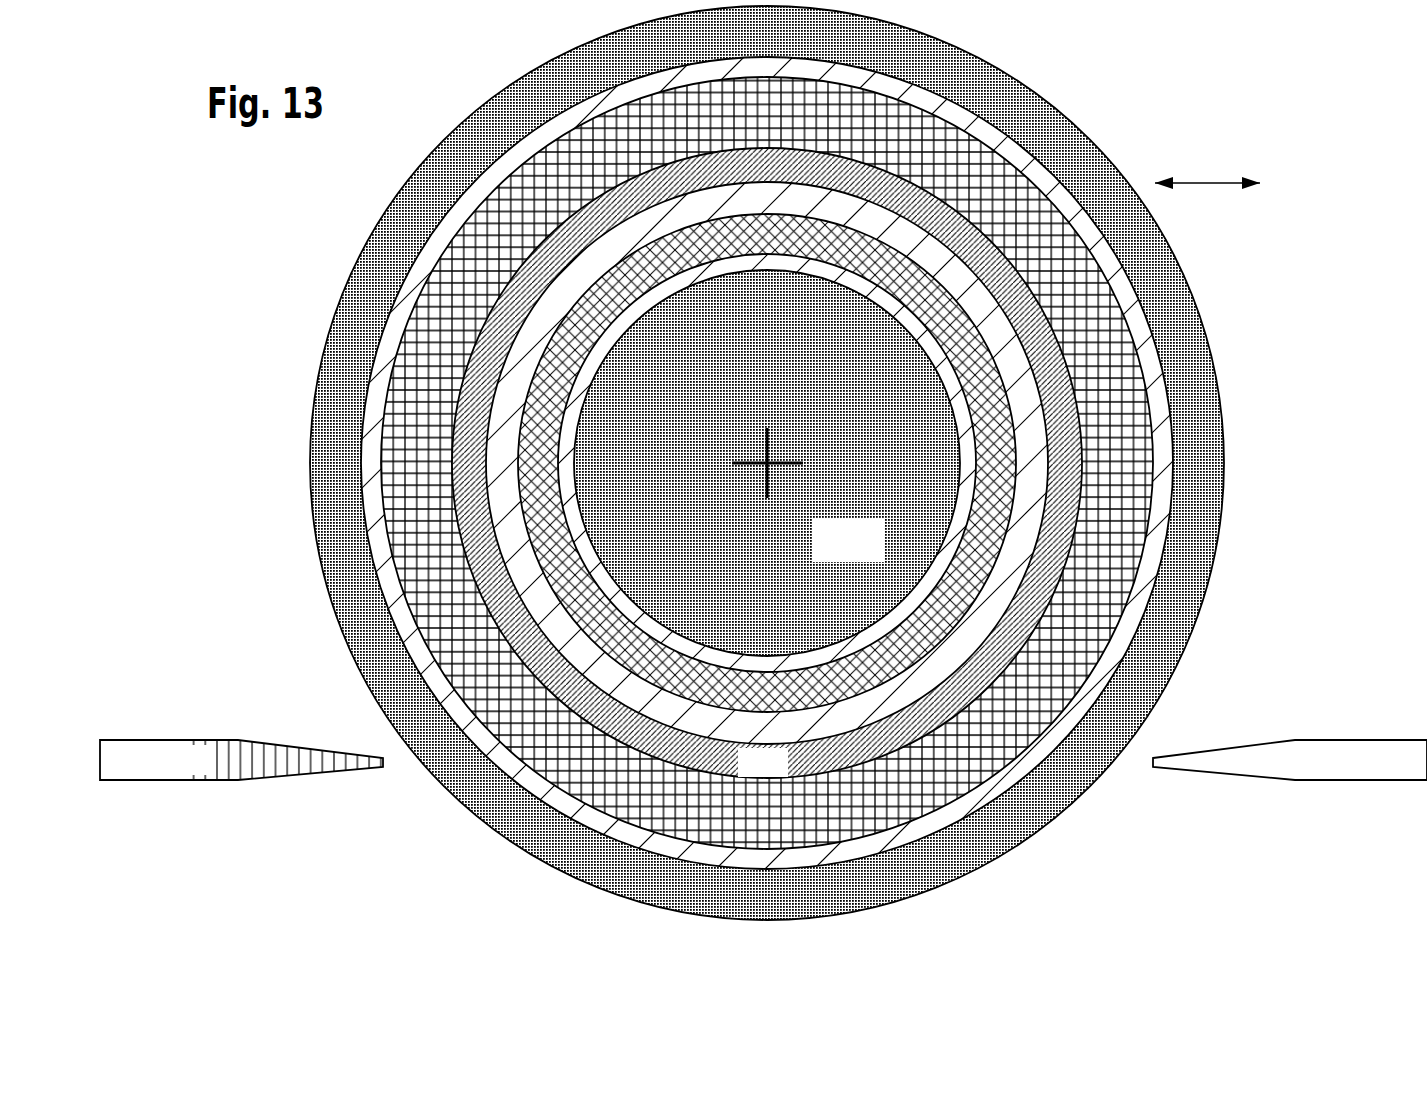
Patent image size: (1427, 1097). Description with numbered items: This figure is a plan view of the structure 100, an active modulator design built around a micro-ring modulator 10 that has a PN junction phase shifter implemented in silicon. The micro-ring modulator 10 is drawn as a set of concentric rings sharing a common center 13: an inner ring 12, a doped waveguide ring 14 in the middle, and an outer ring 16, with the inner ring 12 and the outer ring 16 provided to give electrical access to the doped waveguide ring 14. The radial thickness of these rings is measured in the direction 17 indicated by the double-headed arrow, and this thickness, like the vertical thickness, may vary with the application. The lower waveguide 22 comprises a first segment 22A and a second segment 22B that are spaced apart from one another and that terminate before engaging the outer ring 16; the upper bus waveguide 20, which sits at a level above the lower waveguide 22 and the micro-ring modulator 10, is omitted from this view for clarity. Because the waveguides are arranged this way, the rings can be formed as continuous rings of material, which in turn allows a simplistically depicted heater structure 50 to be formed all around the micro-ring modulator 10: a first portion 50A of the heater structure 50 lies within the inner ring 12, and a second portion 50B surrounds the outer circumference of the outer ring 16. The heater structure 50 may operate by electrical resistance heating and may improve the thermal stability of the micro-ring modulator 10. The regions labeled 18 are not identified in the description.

The structure 100 is at (442, 112).
The micro-ring modulator 10 is at (292, 241).
The inner ring 12 is at (582, 328).
The center 13 is at (765, 460).
The doped waveguide ring 14 is at (565, 252).
The outer ring 16 is at (507, 203).
The direction 17 is at (1207, 182).
The gap 18 is at (467, 317).
The upper bus waveguide 20 is at (774, 772).
The lower waveguide 22 is at (212, 662).
The first segment 22A is at (178, 772).
The second segment 22B is at (1400, 771).
The heater structure 50 is at (1104, 96).
The first portion 50A is at (865, 550).
The second portion 50B is at (1190, 388).